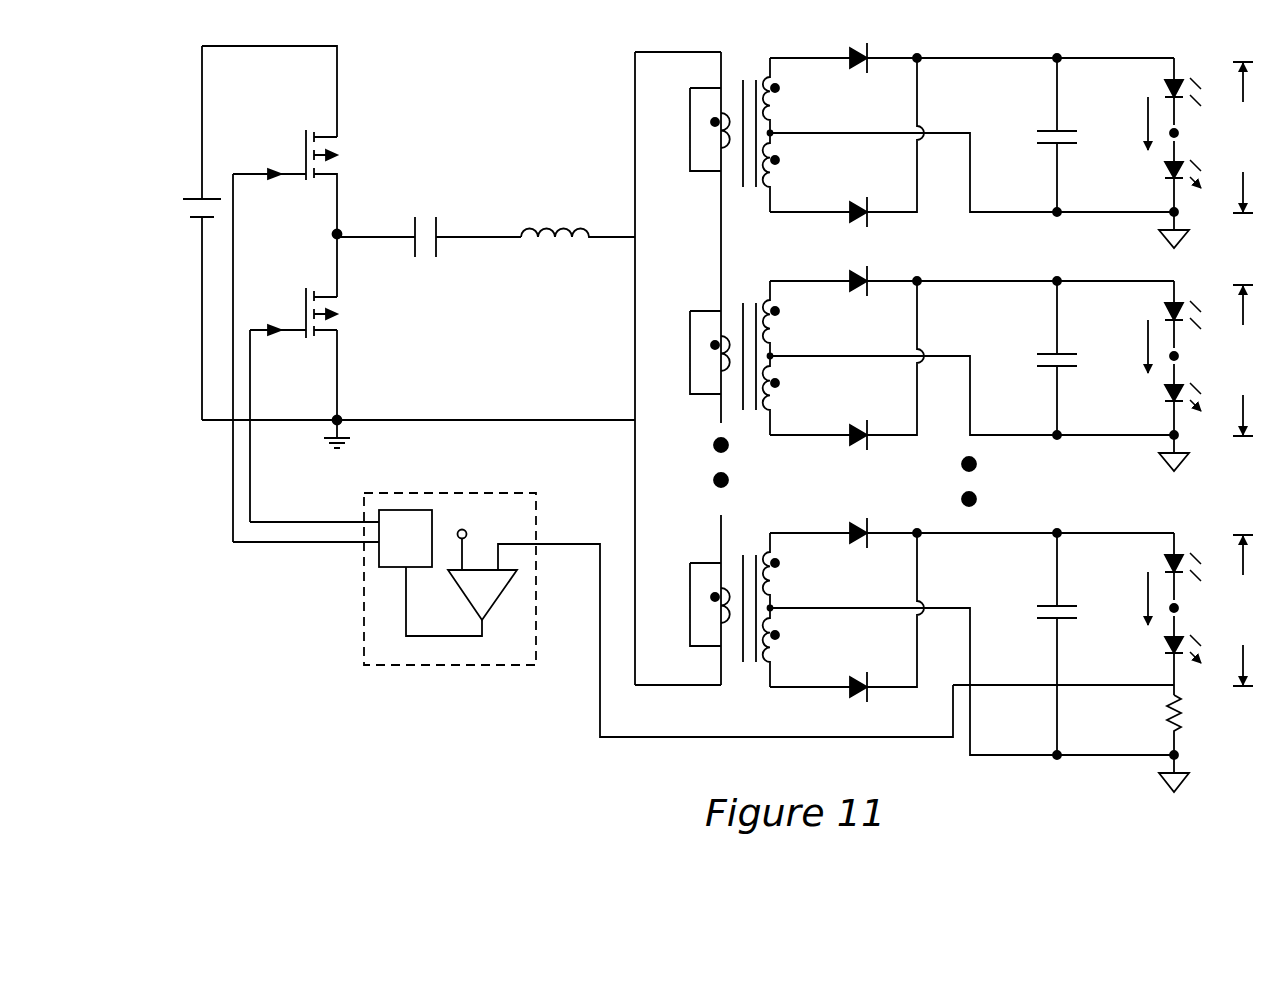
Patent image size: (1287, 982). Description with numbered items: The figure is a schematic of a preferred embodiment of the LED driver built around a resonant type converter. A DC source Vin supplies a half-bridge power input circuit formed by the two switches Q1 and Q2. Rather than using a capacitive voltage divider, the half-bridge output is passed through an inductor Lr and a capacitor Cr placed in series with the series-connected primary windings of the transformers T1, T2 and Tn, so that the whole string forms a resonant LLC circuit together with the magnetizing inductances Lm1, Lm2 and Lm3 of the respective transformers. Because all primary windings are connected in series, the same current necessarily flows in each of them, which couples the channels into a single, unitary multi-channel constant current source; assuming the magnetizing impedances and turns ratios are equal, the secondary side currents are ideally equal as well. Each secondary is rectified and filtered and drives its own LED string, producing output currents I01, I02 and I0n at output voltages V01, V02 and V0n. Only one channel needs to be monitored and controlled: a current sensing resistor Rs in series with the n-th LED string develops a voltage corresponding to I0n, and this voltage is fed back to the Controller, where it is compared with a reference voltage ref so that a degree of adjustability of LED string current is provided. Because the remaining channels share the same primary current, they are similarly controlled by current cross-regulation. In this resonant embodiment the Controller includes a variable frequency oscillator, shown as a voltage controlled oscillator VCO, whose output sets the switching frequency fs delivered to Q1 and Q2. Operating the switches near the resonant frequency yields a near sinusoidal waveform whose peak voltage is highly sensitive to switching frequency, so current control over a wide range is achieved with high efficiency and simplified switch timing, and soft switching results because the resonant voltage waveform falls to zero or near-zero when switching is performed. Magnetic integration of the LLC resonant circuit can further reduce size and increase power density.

The input voltage source Vin is at (184, 233).
The switch Q1 is at (285, 336).
The switch Q2 is at (293, 405).
The capacitor Cr is at (429, 225).
The inductor Lr is at (578, 215).
The magnetizing inductance Lm1 is at (686, 129).
The magnetizing inductance Lm2 is at (686, 352).
The magnetizing inductance Lm3 is at (686, 604).
The transformer T1 is at (754, 129).
The transformer T2 is at (754, 352).
The transformer Tn is at (754, 604).
The LED string current I01 is at (1123, 123).
The LED string current I02 is at (1123, 346).
The LED string current I0n is at (1123, 598).
The output voltage V01 is at (1232, 137).
The output voltage V02 is at (1232, 360).
The output voltage V0n is at (1232, 610).
The current sensing resistor Rs is at (1193, 734).
The voltage controlled oscillator VCO is at (357, 573).
The reference voltage ref is at (460, 536).
The switching frequency fs is at (335, 501).
The controller Controller is at (593, 611).